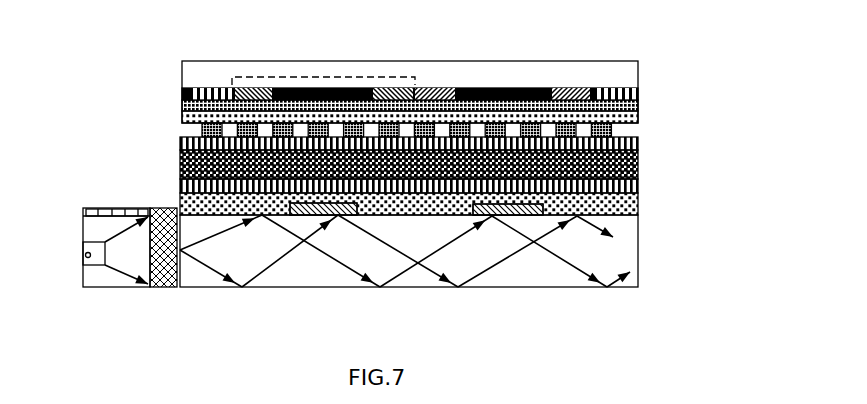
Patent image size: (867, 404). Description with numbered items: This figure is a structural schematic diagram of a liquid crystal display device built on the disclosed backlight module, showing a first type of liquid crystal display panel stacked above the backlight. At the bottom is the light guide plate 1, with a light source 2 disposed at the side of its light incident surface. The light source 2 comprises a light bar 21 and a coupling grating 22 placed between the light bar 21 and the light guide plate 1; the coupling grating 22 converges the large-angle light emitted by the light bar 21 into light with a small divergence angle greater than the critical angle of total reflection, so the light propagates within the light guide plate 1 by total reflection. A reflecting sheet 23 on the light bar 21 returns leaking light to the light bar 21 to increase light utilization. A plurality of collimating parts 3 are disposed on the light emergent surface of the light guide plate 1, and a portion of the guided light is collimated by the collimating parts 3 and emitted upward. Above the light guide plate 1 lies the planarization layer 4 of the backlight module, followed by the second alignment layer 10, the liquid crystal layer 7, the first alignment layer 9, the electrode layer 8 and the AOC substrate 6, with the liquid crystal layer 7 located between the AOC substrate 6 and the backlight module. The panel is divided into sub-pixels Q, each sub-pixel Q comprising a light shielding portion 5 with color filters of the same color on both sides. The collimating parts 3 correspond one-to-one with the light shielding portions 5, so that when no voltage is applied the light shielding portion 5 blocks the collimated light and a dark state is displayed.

The light guide plate 1 is at (638, 250).
The light source 2 is at (168, 175).
The light bar 21 is at (83, 235).
The coupling grating 22 is at (163, 208).
The reflecting sheet 23 is at (120, 209).
The collimating parts 3 is at (527, 205).
The planarization layer 4 is at (638, 210).
The light shielding portion 5 is at (507, 88).
The AOC substrate 6 is at (638, 76).
The liquid crystal layer 7 is at (638, 168).
The electrode layer 8 is at (638, 100).
The first alignment layer 9 is at (638, 146).
The second alignment layer 10 is at (638, 187).
The sub-pixel Q is at (343, 77).